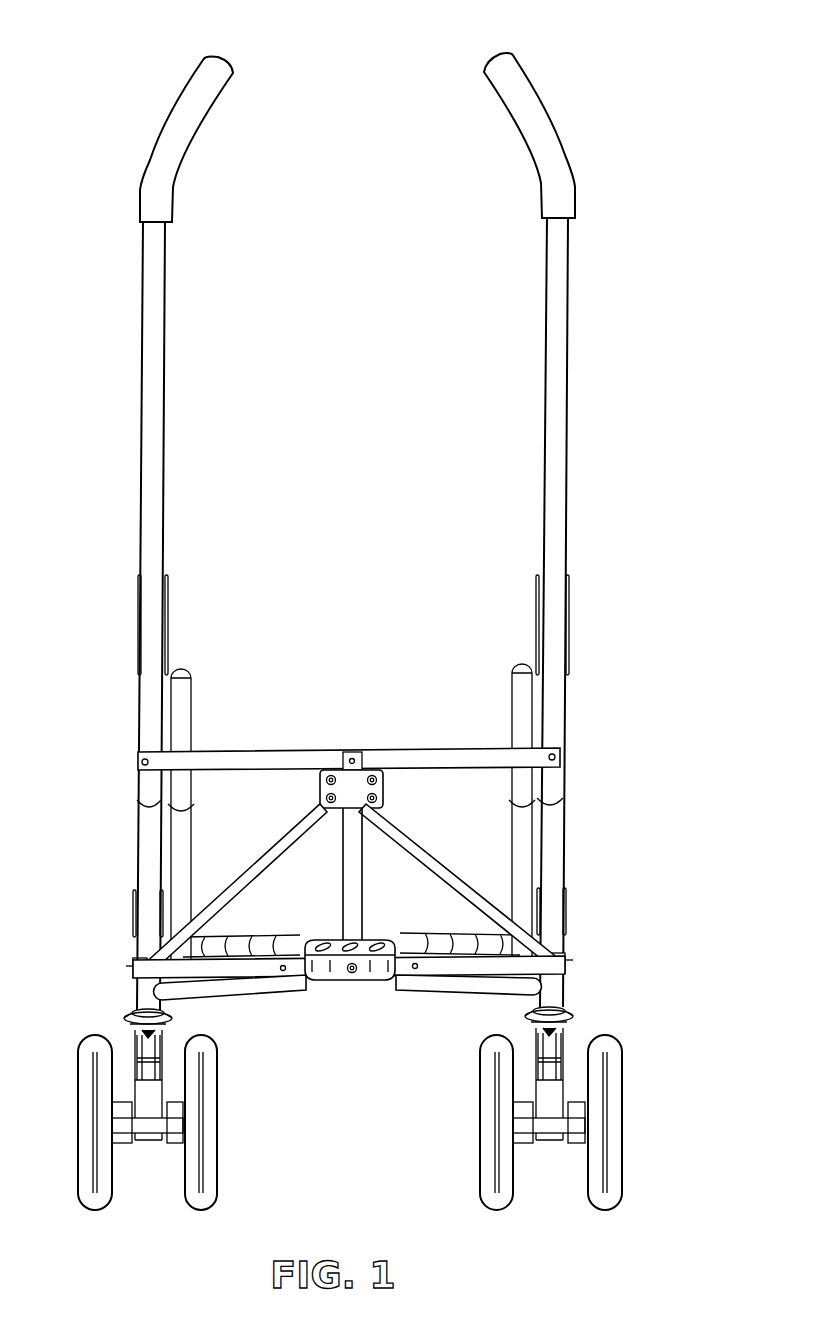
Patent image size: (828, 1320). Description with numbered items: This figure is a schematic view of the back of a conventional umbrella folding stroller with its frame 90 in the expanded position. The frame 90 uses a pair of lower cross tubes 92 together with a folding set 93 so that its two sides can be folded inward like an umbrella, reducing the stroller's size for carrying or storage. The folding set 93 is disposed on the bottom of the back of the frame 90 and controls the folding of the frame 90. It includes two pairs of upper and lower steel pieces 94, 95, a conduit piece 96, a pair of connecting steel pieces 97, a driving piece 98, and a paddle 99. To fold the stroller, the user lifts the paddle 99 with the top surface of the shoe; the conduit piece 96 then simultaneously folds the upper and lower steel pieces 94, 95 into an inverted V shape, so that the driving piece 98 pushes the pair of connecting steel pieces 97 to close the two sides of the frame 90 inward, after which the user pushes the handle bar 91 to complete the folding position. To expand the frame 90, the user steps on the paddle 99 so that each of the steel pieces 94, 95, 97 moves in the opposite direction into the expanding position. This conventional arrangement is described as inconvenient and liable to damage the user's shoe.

The frame 90 is at (612, 470).
The handle bar 91 is at (164, 456).
The lower cross tubes 92 is at (222, 990).
The folding set 93 is at (272, 690).
The upper steel pieces 94 is at (420, 752).
The lower steel pieces 95 is at (447, 965).
The conduit piece 96 is at (362, 892).
The connecting steel pieces 97 is at (233, 888).
The driving piece 98 is at (333, 790).
The paddle 99 is at (352, 980).